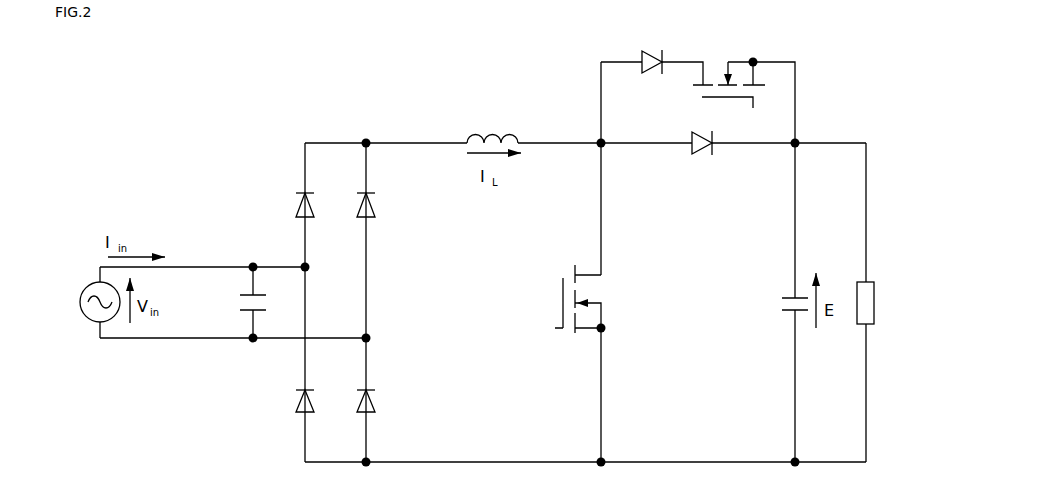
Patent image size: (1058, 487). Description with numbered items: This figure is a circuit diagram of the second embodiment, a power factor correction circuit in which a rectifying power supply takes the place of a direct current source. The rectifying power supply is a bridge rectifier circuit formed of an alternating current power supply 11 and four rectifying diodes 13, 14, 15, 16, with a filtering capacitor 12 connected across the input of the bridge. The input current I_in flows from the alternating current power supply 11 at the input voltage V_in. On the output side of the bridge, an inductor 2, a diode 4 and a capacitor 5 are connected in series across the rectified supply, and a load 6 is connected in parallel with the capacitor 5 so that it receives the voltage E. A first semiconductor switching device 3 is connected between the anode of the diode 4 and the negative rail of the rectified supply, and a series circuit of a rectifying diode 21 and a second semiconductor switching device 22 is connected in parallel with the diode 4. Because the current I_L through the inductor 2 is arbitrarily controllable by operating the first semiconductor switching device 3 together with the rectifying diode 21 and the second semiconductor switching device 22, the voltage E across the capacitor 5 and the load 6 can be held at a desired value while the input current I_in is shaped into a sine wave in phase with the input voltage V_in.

The inductor 2 is at (487, 122).
The first semiconductor switching device 3 is at (552, 290).
The diode 4 is at (690, 135).
The capacitor 5 is at (783, 292).
The load 6 is at (868, 296).
The alternating current power supply 11 is at (88, 288).
The filtering capacitor 12 is at (243, 295).
The rectifying diode 13 is at (300, 185).
The rectifying diode 14 is at (298, 386).
The rectifying diode 15 is at (360, 185).
The rectifying diode 16 is at (362, 386).
The rectifying diode 21 is at (655, 47).
The second semiconductor switching device 22 is at (731, 55).